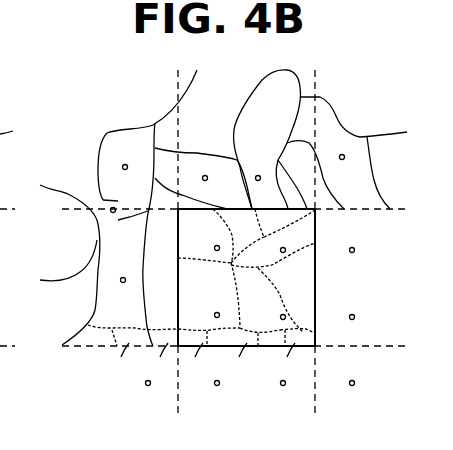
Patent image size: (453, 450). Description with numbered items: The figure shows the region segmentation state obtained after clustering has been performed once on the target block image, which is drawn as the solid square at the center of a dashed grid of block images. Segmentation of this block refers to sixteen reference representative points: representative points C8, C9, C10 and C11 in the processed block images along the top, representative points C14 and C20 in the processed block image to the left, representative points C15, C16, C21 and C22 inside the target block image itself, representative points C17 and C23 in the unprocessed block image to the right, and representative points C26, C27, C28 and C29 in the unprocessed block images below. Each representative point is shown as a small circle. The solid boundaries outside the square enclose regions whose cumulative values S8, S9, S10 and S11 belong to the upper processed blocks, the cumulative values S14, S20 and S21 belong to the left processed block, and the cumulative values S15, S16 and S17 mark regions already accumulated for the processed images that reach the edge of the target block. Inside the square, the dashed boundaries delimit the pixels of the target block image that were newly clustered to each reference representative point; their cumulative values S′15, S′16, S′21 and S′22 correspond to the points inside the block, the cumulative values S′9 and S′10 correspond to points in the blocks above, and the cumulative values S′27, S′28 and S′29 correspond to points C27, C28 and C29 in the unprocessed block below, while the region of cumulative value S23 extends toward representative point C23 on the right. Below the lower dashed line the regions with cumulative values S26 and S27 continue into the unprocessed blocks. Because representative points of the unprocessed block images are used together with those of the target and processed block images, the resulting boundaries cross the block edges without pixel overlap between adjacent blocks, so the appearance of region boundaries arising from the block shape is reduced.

The representative point C8 is at (124, 157).
The cumulative value of region S8 is at (147, 141).
The representative point C9 is at (204, 168).
The cumulative value of region S9 is at (203, 178).
The representative point C10 is at (260, 167).
The cumulative value of region S10 is at (267, 139).
The representative point C11 is at (341, 146).
The cumulative value of region S11 is at (353, 153).
The cumulative value of region S14 is at (143, 207).
The representative point C14 is at (111, 221).
The cumulative value of region S15 is at (159, 279).
The cumulative value of region S16 is at (292, 184).
The cumulative value of region S17 is at (314, 175).
The cumulative value of region S20 is at (87, 265).
The representative point C20 is at (122, 292).
The cumulative value of region S21 is at (133, 302).
The cumulative value of region in target block image S′15 is at (205, 236).
The representative point C15 is at (202, 244).
The cumulative value of region in target block image S′9 is at (252, 223).
The cumulative value of region in target block image S′10 is at (289, 221).
The cumulative value of region in target block image S′16 is at (273, 252).
The representative point C16 is at (297, 243).
The cumulative value of region in target block image S′21 is at (209, 300).
The representative point C21 is at (219, 305).
The cumulative value of region in target block image S′22 is at (250, 295).
The cumulative value of region S23 is at (284, 300).
The representative point C22 is at (269, 316).
The representative point C17 is at (350, 238).
The representative point C23 is at (348, 305).
The cumulative value of region S26 is at (116, 361).
The cumulative value of region S27 is at (158, 361).
The cumulative value of region in target block image S′27 is at (199, 355).
The cumulative value of region in target block image S′28 is at (256, 352).
The cumulative value of region in target block image S′29 is at (297, 353).
The representative point C26 is at (150, 396).
The representative point C27 is at (215, 396).
The representative point C28 is at (282, 396).
The representative point C29 is at (349, 397).